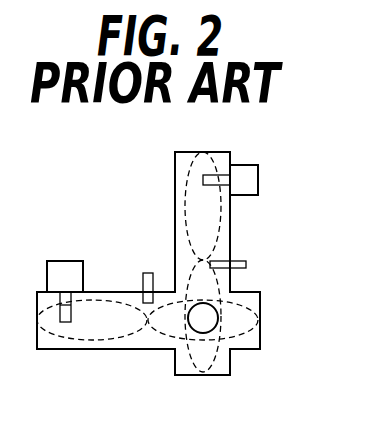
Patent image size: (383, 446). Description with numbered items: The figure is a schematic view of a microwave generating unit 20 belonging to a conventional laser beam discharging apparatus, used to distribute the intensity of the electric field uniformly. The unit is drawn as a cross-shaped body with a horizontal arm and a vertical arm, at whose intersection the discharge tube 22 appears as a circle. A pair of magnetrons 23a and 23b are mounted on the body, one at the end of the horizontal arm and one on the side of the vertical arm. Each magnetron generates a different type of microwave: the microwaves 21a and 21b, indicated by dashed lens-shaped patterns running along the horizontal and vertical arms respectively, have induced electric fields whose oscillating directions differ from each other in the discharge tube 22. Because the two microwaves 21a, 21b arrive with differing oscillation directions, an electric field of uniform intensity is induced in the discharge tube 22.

The microwave generating unit 20 is at (92, 196).
The microwave 21a is at (67, 338).
The microwave 21b is at (225, 222).
The discharge tube 22 is at (212, 318).
The magnetron 23a is at (61, 260).
The magnetron 23b is at (258, 171).